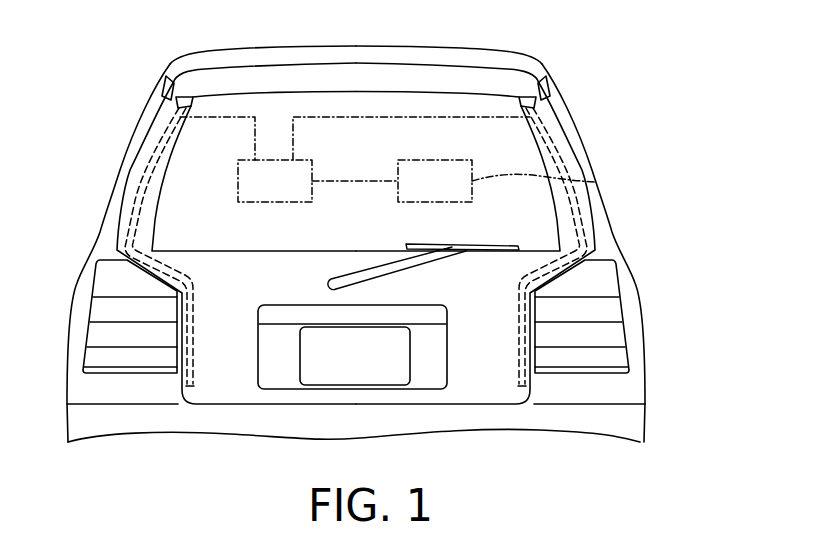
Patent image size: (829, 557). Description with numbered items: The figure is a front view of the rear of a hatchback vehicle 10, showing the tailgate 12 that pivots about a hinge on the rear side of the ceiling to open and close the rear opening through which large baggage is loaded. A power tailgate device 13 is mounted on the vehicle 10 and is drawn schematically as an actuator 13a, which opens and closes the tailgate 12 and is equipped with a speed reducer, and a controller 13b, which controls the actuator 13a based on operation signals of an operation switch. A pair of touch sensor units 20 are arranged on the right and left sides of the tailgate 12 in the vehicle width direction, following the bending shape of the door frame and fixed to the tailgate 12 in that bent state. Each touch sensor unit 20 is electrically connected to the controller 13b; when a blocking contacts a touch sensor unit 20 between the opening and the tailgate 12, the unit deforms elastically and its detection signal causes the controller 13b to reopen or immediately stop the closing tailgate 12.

The vehicle 10 is at (570, 105).
The tailgate 12 is at (480, 348).
The power tailgate device 13 is at (345, 110).
The actuator 13a is at (596, 182).
The controller 13b is at (238, 182).
The touch sensor unit 20 is at (128, 213).